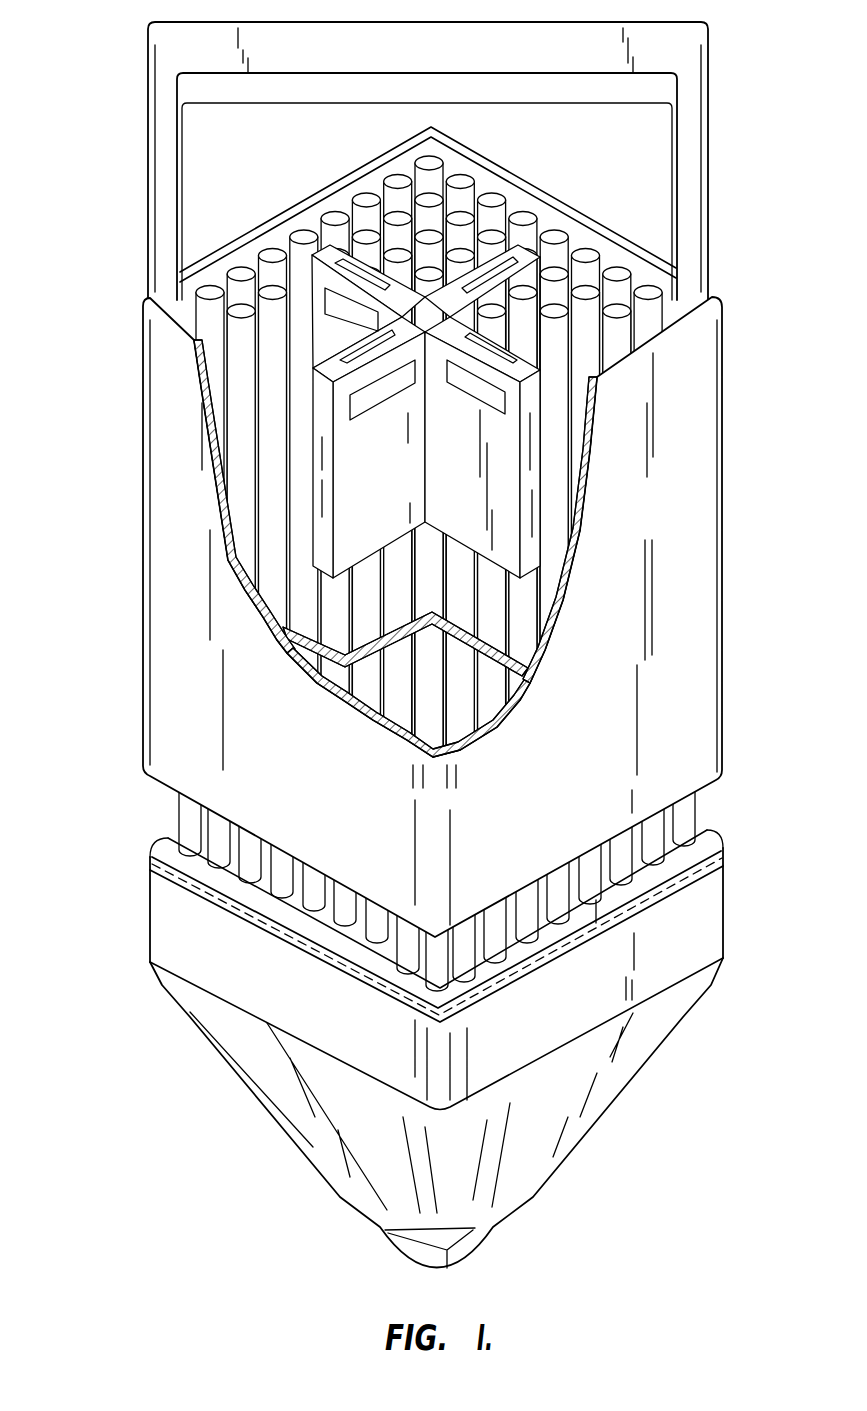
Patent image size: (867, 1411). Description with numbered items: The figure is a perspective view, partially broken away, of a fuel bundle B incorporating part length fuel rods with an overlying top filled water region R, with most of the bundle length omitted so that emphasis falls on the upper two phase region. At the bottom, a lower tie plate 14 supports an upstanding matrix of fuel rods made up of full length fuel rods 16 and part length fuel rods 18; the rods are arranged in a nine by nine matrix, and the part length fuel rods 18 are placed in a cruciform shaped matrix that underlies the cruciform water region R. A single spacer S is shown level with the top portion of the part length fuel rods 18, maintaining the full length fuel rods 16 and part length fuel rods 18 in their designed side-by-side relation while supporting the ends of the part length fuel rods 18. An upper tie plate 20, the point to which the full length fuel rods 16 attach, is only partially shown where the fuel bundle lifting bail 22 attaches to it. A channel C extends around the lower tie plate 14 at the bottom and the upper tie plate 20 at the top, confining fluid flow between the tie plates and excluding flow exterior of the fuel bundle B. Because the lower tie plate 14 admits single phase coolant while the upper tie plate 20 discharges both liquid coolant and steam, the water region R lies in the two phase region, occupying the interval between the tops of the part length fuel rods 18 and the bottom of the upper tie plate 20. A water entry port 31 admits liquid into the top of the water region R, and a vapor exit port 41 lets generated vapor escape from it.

The lower tie plate 14 is at (186, 857).
The full length fuel rods 16 is at (241, 268).
The part length fuel rods 18 is at (287, 652).
The upper tie plate 20 is at (146, 302).
The fuel bundle lifting bail 22 is at (512, 38).
The water entry port 31 is at (470, 396).
The vapor exit port 41 is at (352, 294).
The water region R is at (466, 507).
The spacer S is at (541, 665).
The channel C is at (560, 786).
The fuel bundle B is at (727, 744).